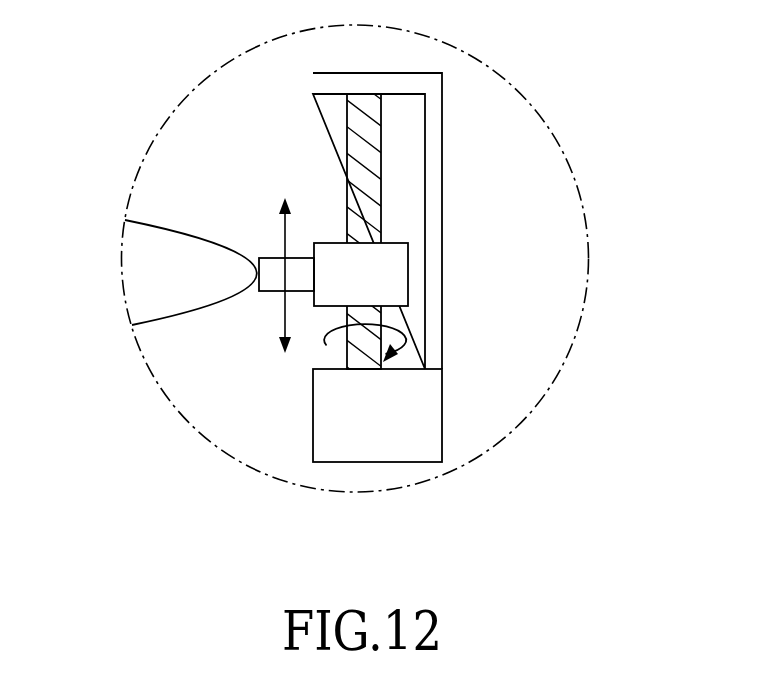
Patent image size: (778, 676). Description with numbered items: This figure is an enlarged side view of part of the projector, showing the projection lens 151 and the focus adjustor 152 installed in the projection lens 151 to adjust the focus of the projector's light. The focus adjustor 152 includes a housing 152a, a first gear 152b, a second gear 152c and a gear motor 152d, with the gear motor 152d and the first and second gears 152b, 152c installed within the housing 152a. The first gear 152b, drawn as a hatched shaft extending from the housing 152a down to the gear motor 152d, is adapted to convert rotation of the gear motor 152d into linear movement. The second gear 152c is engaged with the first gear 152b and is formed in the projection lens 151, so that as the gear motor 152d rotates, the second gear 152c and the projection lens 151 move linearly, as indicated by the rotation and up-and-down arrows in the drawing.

The projection lens 151 is at (135, 266).
The focus adjustor 152 is at (677, 432).
The housing 152a is at (445, 213).
The first gear 152b is at (381, 316).
The second gear 152c is at (394, 275).
The gear motor 152d is at (415, 418).